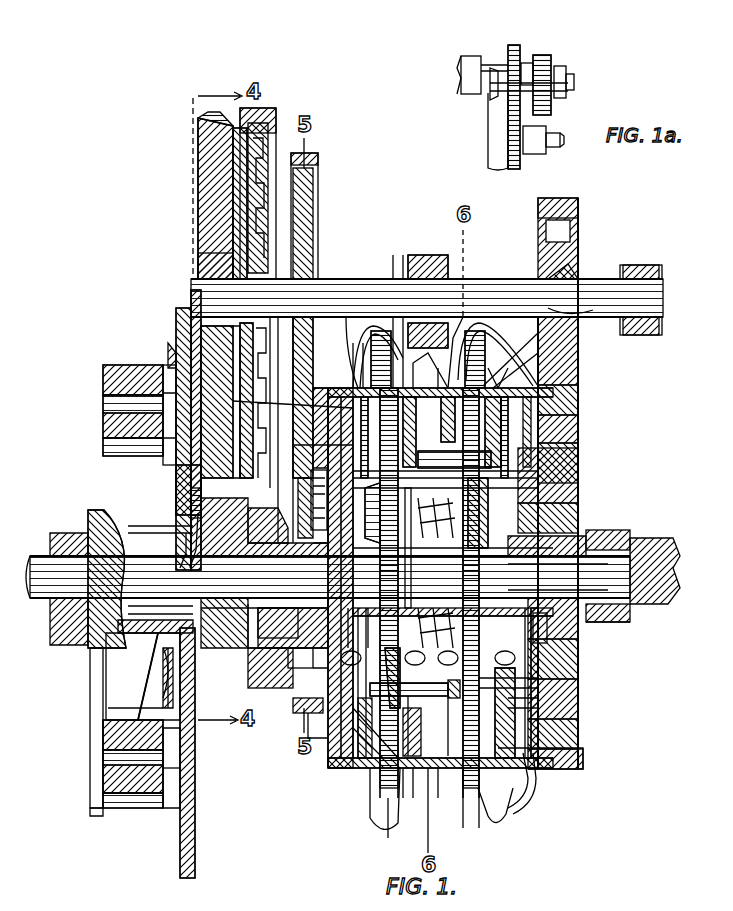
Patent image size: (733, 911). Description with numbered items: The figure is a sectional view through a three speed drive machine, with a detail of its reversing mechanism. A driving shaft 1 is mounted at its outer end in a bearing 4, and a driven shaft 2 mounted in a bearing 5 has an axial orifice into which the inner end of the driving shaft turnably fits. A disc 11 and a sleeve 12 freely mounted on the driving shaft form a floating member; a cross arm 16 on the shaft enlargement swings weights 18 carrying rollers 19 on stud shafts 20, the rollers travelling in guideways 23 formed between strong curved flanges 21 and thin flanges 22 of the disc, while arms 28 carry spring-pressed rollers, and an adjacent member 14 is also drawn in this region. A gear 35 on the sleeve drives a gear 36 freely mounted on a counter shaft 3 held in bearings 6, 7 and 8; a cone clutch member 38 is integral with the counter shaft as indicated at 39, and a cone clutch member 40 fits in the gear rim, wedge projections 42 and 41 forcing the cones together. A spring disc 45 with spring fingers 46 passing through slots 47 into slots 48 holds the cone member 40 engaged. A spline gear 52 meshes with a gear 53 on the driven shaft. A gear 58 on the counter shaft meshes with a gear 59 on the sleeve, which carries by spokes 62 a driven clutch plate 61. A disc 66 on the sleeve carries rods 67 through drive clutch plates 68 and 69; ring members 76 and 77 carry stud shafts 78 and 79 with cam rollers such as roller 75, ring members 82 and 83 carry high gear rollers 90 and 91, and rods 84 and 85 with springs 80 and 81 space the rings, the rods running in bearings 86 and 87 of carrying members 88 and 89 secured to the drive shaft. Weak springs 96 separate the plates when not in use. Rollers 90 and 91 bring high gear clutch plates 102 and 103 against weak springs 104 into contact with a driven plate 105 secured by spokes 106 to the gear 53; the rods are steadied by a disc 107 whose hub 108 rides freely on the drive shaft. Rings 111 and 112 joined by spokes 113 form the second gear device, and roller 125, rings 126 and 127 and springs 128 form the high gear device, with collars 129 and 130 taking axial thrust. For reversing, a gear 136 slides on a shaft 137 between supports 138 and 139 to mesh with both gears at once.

In FIG. 1, the driving shaft 1 is at (652, 562).
In FIG. 1, the driven shaft 2 is at (622, 605).
In FIG. 1, the counter shaft 3 is at (655, 290).
In FIG. 1, the bearing 4 is at (62, 610).
In FIG. 1, the bearing 5 is at (622, 614).
In FIG. 1, the bearing 6 is at (192, 250).
In FIG. 1, the bearing 7 is at (422, 247).
In FIG. 1, the bearing 8 is at (630, 262).
In FIG. 1A, the bearing 8 is at (540, 50).
In FIG. 1, the disc 11 is at (180, 860).
In FIG. 1, the sleeve 12 is at (172, 676).
In FIG. 1, the clutch member 14 is at (220, 402).
In FIG. 1, the cross arm 16 is at (88, 712).
In FIG. 1, the weights 18 is at (100, 357).
In FIG. 1, the rollers 19 is at (160, 425).
In FIG. 1, the stud shafts 20 is at (96, 405).
In FIG. 1, the curved flanges 21 is at (165, 352).
In FIG. 1, the thin flanges 22 is at (160, 440).
In FIG. 1, the guideways 23 is at (175, 330).
In FIG. 1, the arms 28 is at (105, 678).
In FIG. 1, the gear 35 is at (258, 675).
In FIG. 1, the gear 36 is at (252, 100).
In FIG. 1, the cone clutch member 38 is at (226, 205).
In FIG. 1, the integral connection of cone clutch member 39 is at (183, 282).
In FIG. 1, the cone clutch member 40 is at (218, 110).
In FIG. 1, the wedge like projections 41 is at (212, 185).
In FIG. 1, the wedge like projections 42 is at (290, 195).
In FIG. 1, the spring disc 45 is at (188, 495).
In FIG. 1, the spring fingers 46 is at (180, 498).
In FIG. 1, the slots 47 is at (186, 525).
In FIG. 1, the slots 48 is at (182, 562).
In FIG. 1, the spline gear 52 is at (568, 238).
In FIG. 1A, the spline gear 52 is at (510, 40).
In FIG. 1, the gear 53 is at (548, 508).
In FIG. 1A, the gear 53 is at (513, 155).
In FIG. 1, the gear 58 is at (305, 205).
In FIG. 1, the gear 59 is at (305, 730).
In FIG. 1, the driven clutch plate 61 is at (388, 258).
In FIG. 1, the web or spokes 62 is at (343, 275).
In FIG. 1, the disc 66 is at (322, 755).
In FIG. 1, the rods 67 is at (525, 775).
In FIG. 1, the drive clutch plate 68 is at (375, 359).
In FIG. 1, the drive clutch plate 69 is at (465, 322).
In FIG. 1, the cam roller 75 is at (485, 365).
In FIG. 1, the ring member 76 is at (354, 740).
In FIG. 1, the ring member 77 is at (441, 801).
In FIG. 1, the stud shaft 78 is at (334, 363).
In FIG. 1, the stud shaft 79 is at (436, 375).
In FIG. 1, the compression springs 80 is at (430, 726).
In FIG. 1, the compression springs 81 is at (445, 442).
In FIG. 1, the ring member 82 is at (500, 678).
In FIG. 1, the ring member 83 is at (530, 696).
In FIG. 1, the rods 84 is at (428, 690).
In FIG. 1, the rods 85 is at (548, 472).
In FIG. 1, the bearing 86 is at (290, 705).
In FIG. 1, the bearing 87 is at (560, 420).
In FIG. 1, the carrying member 88 is at (372, 593).
In FIG. 1, the carrying member 89 is at (560, 750).
In FIG. 1, the roller 90 is at (500, 365).
In FIG. 1, the roller 91 is at (560, 355).
In FIG. 1, the weak springs 96 is at (380, 830).
In FIG. 1, the high gear clutch plate 102 is at (450, 320).
In FIG. 1, the high gear clutch plate 103 is at (572, 268).
In FIG. 1, the weak springs 104 is at (490, 800).
In FIG. 1, the driven plate 105 is at (485, 315).
In FIG. 1, the web or spokes 106 is at (570, 305).
In FIG. 1, the disc 107 is at (555, 490).
In FIG. 1, the hub 108 is at (560, 525).
In FIG. 1, the ring 111 is at (323, 500).
In FIG. 1, the ring 112 is at (300, 518).
In FIG. 1, the spokes 113 is at (300, 655).
In FIG. 1, the roller 125 is at (540, 642).
In FIG. 1, the ring 126 is at (446, 543).
In FIG. 1, the ring 127 is at (545, 660).
In FIG. 1, the springs 128 is at (558, 577).
In FIG. 1, the collar 129 is at (278, 626).
In FIG. 1, the collar 130 is at (612, 527).
In FIG. 1A, the gear 136 is at (543, 100).
In FIG. 1A, the shaft 137 is at (543, 60).
In FIG. 1A, the support 138 is at (488, 82).
In FIG. 1A, the support 139 is at (566, 72).